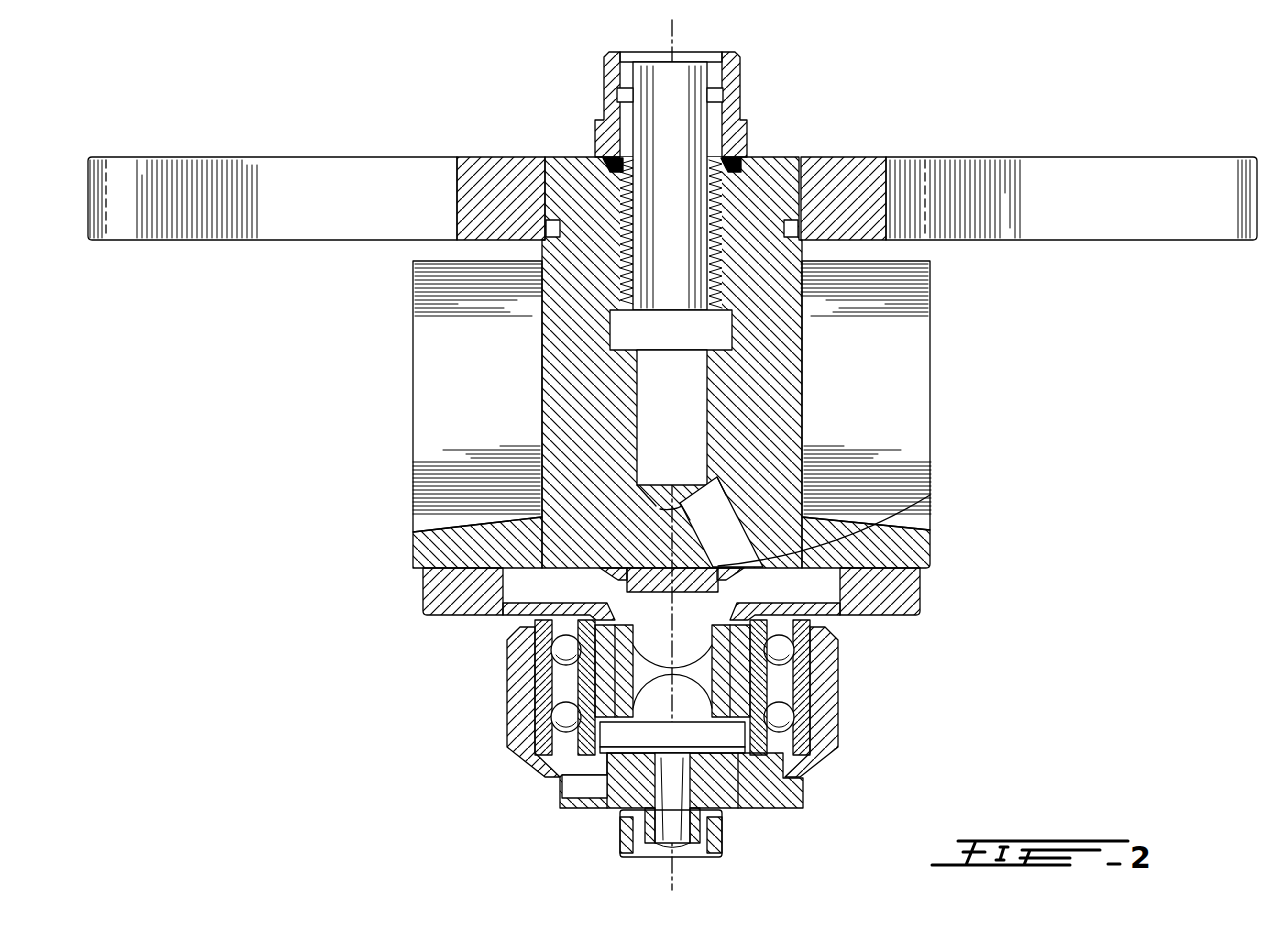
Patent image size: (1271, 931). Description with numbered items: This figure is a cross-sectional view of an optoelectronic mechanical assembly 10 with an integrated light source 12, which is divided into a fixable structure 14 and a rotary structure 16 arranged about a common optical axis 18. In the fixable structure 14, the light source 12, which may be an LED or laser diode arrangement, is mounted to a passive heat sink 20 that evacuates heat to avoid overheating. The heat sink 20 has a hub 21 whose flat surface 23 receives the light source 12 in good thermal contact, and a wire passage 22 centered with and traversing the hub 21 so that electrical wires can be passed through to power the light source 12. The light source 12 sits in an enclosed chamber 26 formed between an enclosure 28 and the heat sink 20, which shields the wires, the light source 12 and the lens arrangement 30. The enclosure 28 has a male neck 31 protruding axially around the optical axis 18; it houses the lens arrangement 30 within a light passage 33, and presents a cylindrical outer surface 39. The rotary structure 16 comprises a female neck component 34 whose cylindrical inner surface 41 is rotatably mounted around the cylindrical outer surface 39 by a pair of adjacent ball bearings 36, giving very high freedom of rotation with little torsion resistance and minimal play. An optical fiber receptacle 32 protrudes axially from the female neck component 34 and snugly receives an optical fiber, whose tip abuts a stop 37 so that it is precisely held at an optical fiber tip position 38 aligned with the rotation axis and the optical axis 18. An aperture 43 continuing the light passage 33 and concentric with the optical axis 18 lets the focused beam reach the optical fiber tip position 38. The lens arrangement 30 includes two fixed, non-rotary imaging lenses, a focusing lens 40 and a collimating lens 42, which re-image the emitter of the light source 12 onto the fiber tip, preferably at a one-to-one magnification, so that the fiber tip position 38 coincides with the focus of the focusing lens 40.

The optoelectronic mechanical assembly 10 is at (1068, 383).
The light source 12 is at (810, 498).
The fixable structure 14 is at (898, 343).
The rotary structure 16 is at (843, 740).
The optical axis 18 is at (672, 30).
The heat sink 20 is at (452, 445).
The hub 21 is at (445, 545).
The wire passage 22 is at (650, 380).
The flat surface 23 is at (540, 625).
The enclosed chamber 26 is at (822, 585).
The enclosure 28 is at (432, 600).
The lens arrangement 30 is at (686, 704).
The male neck 31 is at (688, 647).
The optical fiber receptacle 32 is at (620, 830).
The light passage 33 is at (697, 677).
The female neck component 34 is at (517, 712).
The bearing 36 is at (776, 718).
The stop 37 is at (650, 845).
The optical fiber tip position 38 is at (712, 838).
The cylindrical outer surface 39 is at (540, 645).
The focusing lens 40 is at (653, 707).
The cylindrical inner surface 41 is at (540, 768).
The collimating lens 42 is at (820, 612).
The aperture 43 is at (668, 840).